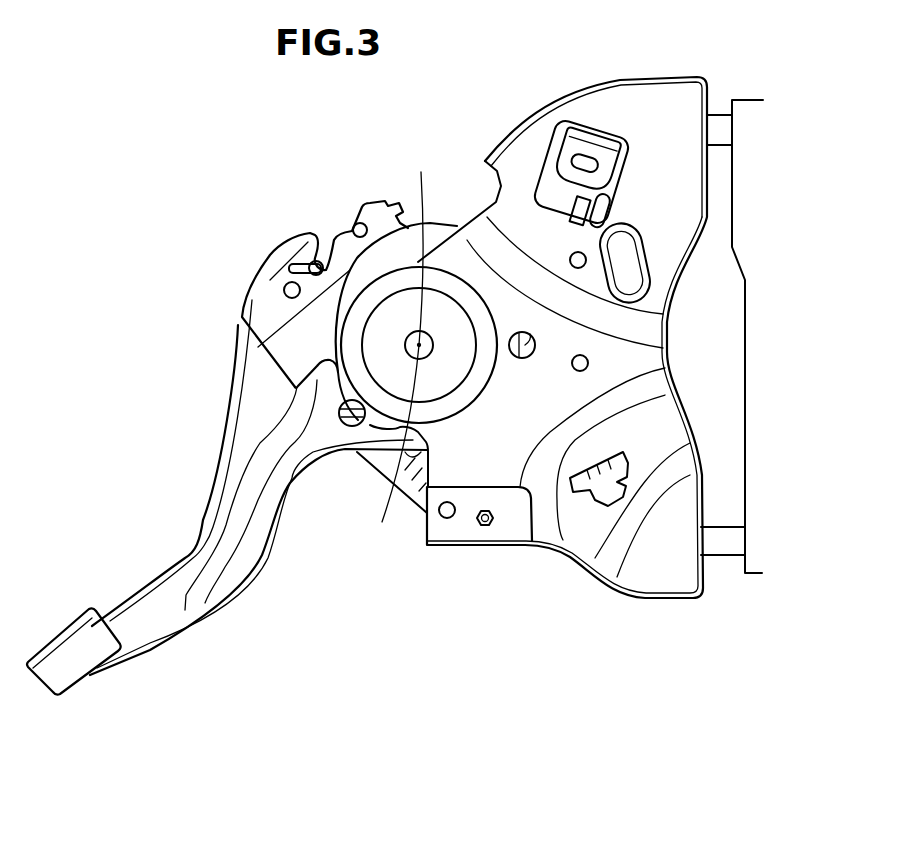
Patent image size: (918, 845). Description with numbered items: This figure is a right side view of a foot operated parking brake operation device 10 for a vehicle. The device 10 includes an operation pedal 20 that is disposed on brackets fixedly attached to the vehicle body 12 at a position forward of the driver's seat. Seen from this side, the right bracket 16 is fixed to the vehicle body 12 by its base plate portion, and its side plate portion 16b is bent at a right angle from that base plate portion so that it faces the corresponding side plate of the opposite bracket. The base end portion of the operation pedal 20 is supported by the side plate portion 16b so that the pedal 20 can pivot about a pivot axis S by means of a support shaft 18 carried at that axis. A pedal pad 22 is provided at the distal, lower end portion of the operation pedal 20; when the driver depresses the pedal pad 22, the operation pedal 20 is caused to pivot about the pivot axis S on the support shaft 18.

The foot operated parking brake operation device 10 is at (276, 192).
The vehicle body 12 is at (740, 118).
The right bracket 16 is at (565, 82).
The side plate portion 16b is at (518, 148).
The support shaft 18 is at (392, 502).
The operation pedal 20 is at (247, 418).
The pedal pad 22 is at (86, 628).
The pivot axis S is at (402, 335).